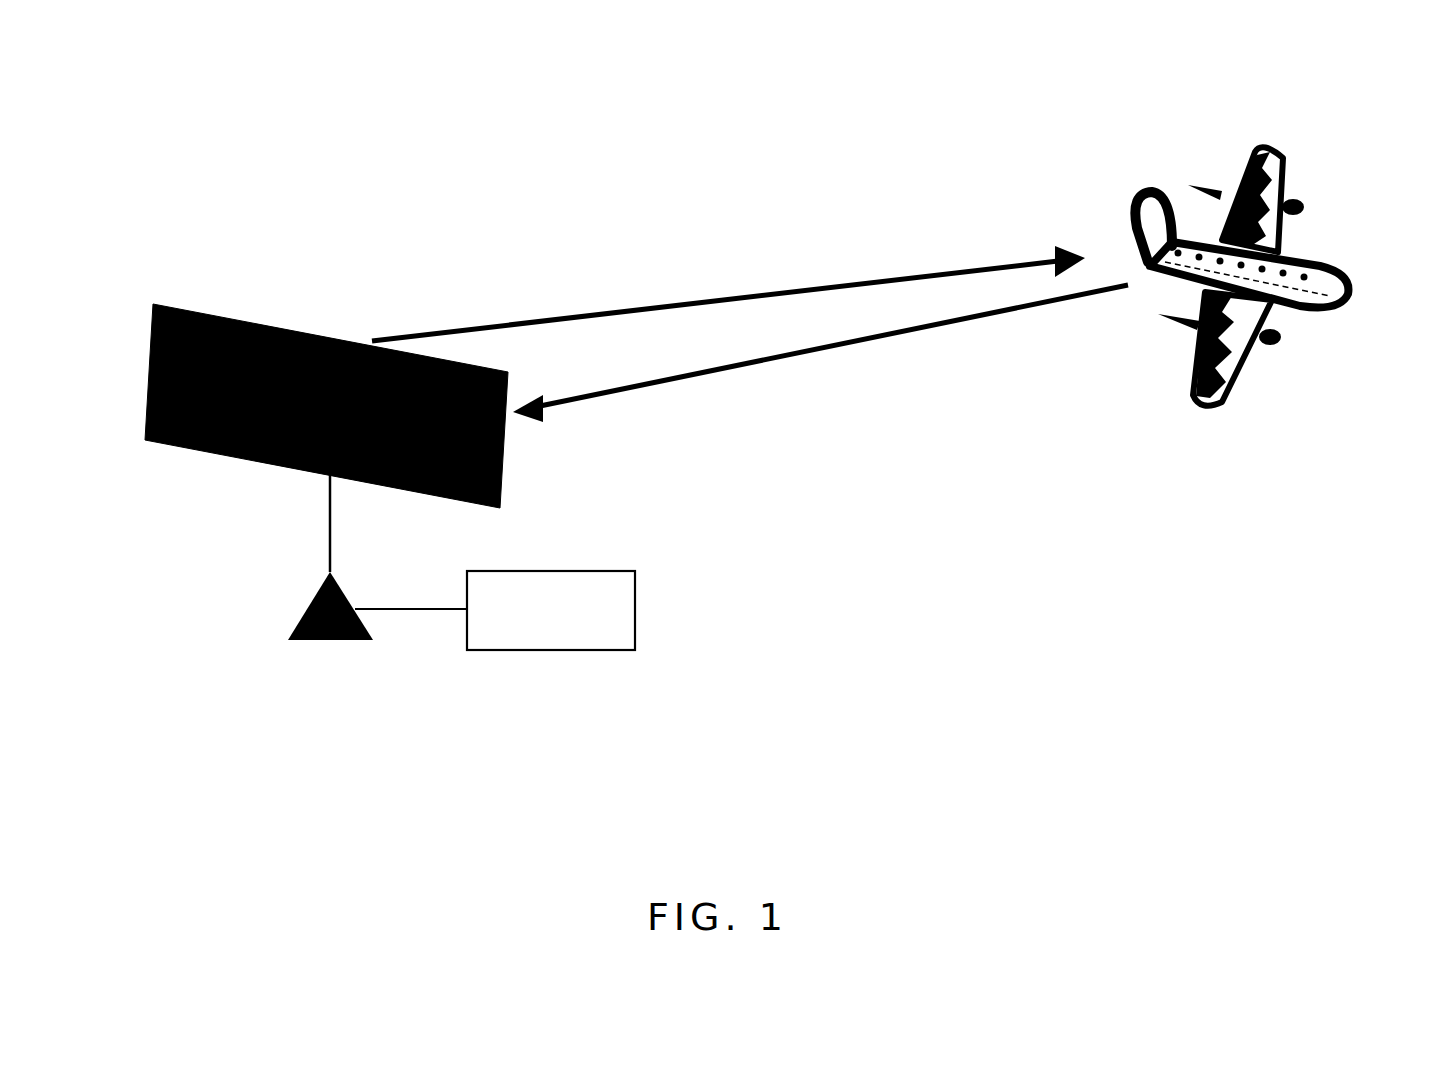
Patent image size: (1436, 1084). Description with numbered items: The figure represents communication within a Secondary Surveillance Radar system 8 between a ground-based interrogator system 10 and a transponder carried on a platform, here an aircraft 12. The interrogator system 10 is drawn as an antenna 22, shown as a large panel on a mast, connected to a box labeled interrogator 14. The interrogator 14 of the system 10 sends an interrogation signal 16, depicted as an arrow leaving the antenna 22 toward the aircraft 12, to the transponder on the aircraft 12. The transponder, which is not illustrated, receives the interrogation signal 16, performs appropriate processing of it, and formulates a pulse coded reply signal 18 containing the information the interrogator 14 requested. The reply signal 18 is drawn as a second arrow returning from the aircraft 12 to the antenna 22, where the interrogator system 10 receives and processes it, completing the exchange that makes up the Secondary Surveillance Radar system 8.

The Secondary Surveillance Radar system 8 is at (1082, 632).
The interrogator system 10 is at (205, 670).
The aircraft 12 is at (1280, 143).
The interrogator 14 is at (635, 611).
The interrogation signal 16 is at (576, 312).
The reply signal 18 is at (827, 350).
The antenna 22 is at (173, 305).